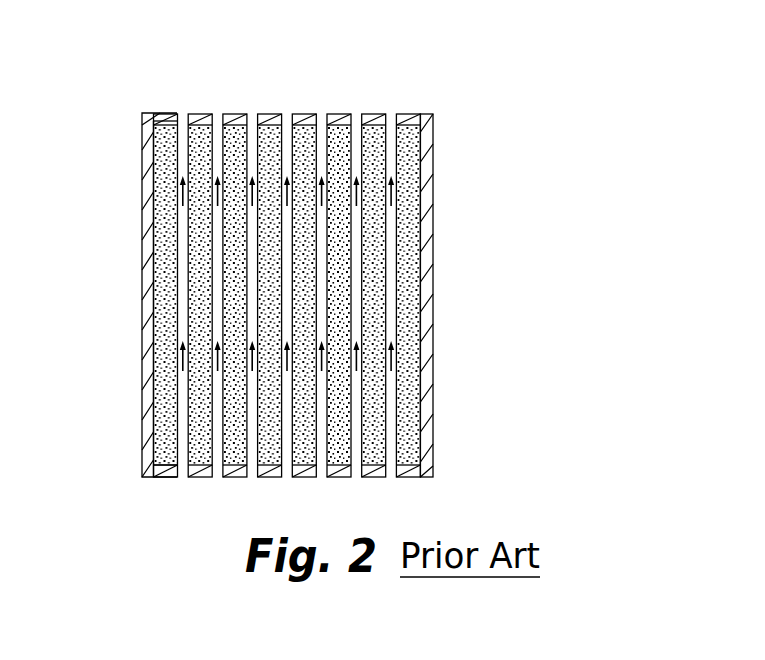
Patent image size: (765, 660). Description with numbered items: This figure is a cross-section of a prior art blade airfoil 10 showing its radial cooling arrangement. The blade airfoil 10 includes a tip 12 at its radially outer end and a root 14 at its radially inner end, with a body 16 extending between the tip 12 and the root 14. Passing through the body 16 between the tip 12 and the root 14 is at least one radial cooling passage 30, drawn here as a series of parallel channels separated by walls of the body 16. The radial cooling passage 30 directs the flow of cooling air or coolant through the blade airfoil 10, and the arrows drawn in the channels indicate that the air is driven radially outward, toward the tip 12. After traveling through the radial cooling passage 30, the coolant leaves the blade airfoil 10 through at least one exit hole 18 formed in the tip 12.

The blade airfoil 10 is at (527, 286).
The tip 12 is at (412, 122).
The root 14 is at (423, 472).
The body 16 is at (410, 349).
The exit hole 18 is at (185, 115).
The radial cooling passage 30 is at (180, 258).